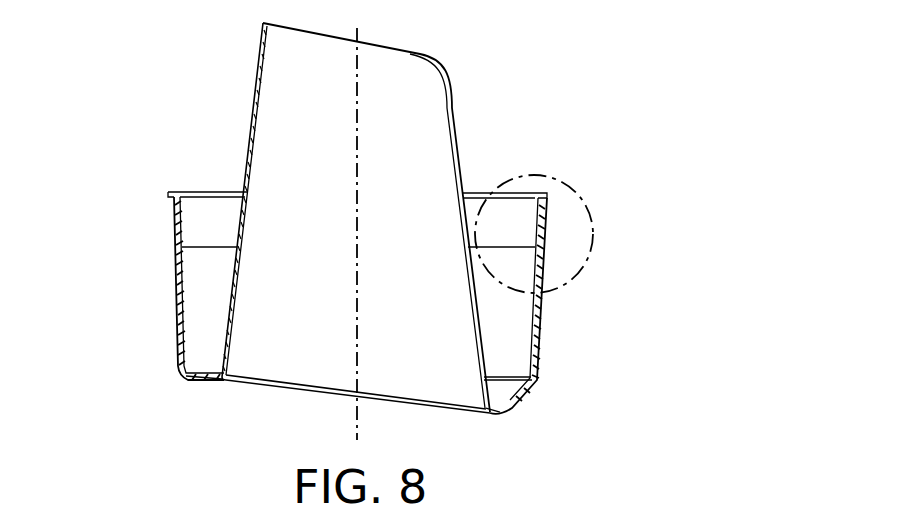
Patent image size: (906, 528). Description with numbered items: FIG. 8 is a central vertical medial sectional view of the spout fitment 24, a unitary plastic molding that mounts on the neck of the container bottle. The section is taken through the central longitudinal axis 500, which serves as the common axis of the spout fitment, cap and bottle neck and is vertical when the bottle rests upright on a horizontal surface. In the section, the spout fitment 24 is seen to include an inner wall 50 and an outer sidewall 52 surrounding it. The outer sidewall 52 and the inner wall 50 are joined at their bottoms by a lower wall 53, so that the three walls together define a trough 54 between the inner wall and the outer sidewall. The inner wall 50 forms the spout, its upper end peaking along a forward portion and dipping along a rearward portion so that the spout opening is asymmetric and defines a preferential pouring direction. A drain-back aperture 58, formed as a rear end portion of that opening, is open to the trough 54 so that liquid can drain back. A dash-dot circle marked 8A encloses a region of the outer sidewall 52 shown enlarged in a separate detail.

The spout fitment 24 is at (177, 139).
The outer sidewall 52 is at (177, 296).
The trough 54 is at (213, 299).
The inner wall 50 is at (243, 265).
The central longitudinal axis 500 is at (357, 343).
The lower wall 53 is at (196, 382).
The drain-back aperture 58 is at (497, 416).
The detail circle 8A is at (594, 227).